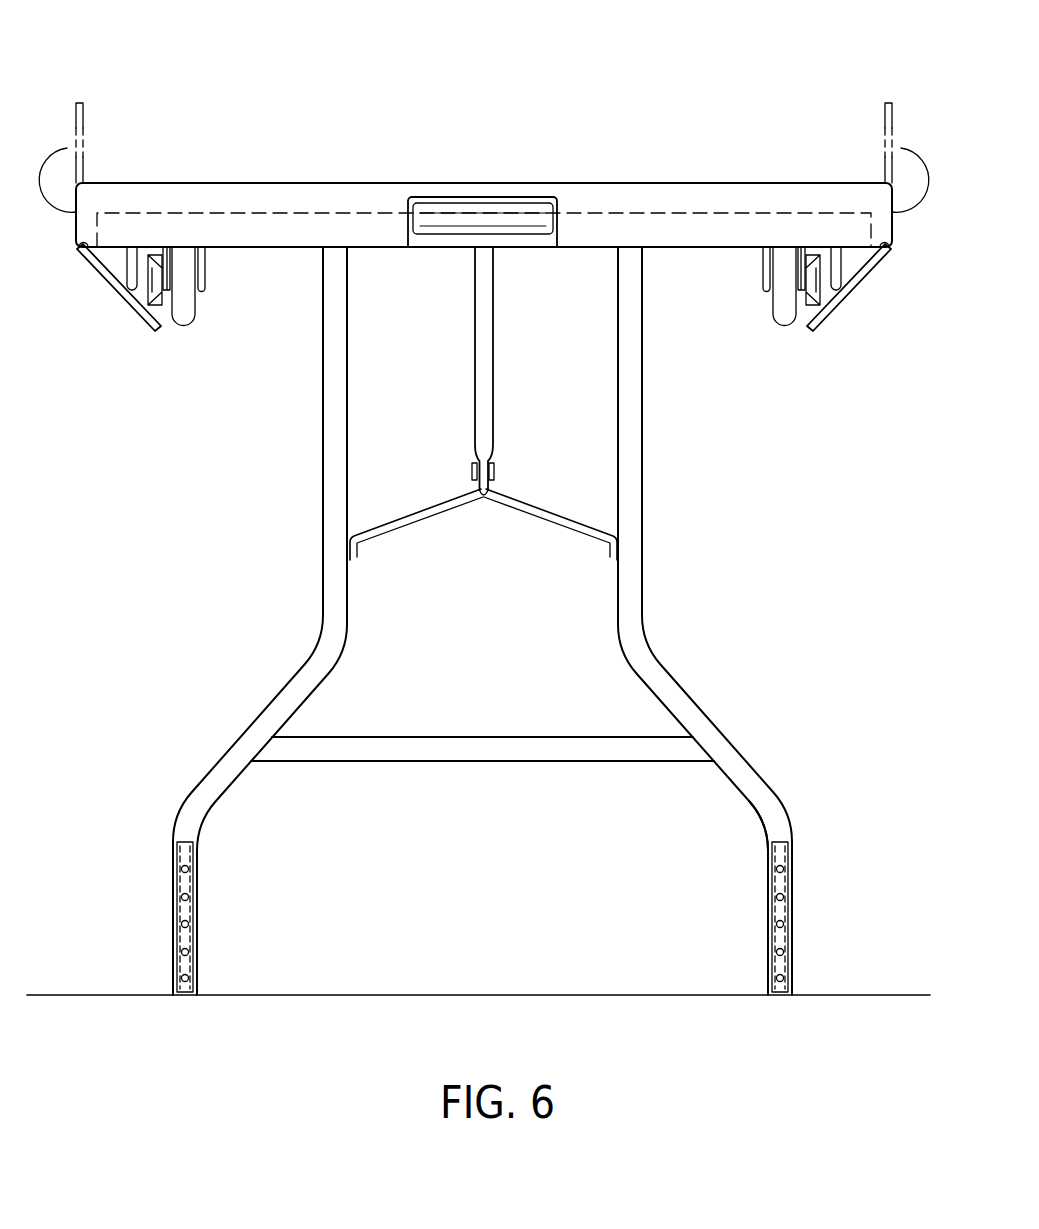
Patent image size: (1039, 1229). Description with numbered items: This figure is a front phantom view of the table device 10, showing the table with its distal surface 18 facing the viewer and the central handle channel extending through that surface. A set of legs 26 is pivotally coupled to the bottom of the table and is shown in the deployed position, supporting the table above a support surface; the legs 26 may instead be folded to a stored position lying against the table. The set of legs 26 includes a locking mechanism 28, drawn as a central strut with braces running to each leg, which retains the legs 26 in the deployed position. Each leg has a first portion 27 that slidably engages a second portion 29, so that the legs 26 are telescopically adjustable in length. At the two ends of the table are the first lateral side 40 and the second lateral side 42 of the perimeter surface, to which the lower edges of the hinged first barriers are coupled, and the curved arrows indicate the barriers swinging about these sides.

The table device 10 is at (590, 98).
The distal surface 18 is at (693, 196).
The legs 26 is at (642, 523).
The first portion 27 is at (820, 815).
The locking mechanism 28 is at (485, 349).
The second portion 29 is at (767, 812).
The first lateral side 40 is at (90, 290).
The second lateral side 42 is at (878, 290).